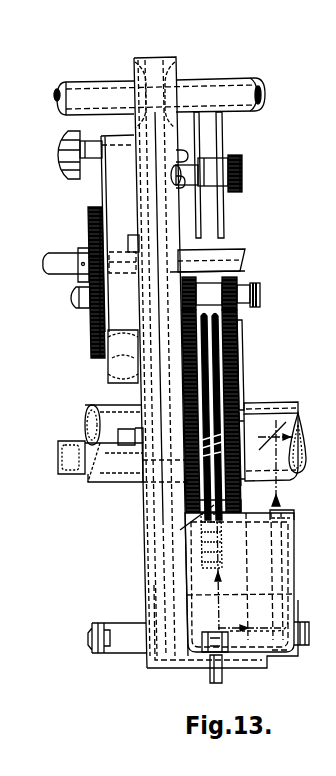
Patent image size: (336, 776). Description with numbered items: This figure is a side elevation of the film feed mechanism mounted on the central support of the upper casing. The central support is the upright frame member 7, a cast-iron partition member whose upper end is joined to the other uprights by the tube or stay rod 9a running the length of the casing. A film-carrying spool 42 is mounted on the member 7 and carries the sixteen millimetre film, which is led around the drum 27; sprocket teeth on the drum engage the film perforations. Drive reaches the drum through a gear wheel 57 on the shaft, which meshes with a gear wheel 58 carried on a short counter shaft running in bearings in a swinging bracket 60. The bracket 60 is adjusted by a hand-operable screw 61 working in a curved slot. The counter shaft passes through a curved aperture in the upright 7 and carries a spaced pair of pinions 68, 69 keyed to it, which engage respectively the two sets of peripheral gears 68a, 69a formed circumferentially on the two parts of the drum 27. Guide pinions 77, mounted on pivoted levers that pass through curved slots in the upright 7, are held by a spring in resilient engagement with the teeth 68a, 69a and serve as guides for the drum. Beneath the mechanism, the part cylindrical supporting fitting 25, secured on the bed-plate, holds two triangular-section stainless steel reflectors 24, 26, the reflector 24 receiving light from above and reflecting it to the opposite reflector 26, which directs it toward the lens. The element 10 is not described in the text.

The upright frame member 7 is at (148, 66).
The tube or stay rod 9a is at (200, 80).
The film-carrying spool 42 is at (220, 133).
The hand-operable screw 61 is at (62, 155).
The swinging bracket 60 is at (122, 192).
The gear wheel 57 is at (90, 230).
The gear wheel 58 is at (92, 337).
The pinion 68 is at (186, 280).
The pinion 69 is at (245, 262).
The peripheral gears 68a is at (241, 325).
The peripheral gears 69a is at (239, 357).
The bar 10 is at (249, 406).
The drum 27 is at (241, 422).
The guide pinions 77 is at (200, 428).
The reflector 26 is at (195, 512).
The reflector 24 is at (272, 513).
The part cylindrical supporting fitting 25 is at (255, 550).